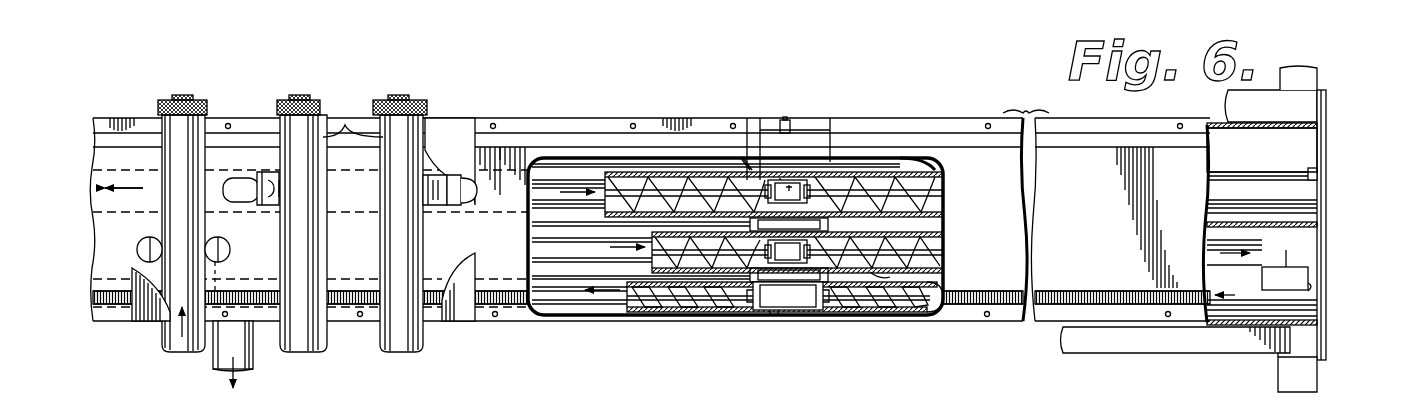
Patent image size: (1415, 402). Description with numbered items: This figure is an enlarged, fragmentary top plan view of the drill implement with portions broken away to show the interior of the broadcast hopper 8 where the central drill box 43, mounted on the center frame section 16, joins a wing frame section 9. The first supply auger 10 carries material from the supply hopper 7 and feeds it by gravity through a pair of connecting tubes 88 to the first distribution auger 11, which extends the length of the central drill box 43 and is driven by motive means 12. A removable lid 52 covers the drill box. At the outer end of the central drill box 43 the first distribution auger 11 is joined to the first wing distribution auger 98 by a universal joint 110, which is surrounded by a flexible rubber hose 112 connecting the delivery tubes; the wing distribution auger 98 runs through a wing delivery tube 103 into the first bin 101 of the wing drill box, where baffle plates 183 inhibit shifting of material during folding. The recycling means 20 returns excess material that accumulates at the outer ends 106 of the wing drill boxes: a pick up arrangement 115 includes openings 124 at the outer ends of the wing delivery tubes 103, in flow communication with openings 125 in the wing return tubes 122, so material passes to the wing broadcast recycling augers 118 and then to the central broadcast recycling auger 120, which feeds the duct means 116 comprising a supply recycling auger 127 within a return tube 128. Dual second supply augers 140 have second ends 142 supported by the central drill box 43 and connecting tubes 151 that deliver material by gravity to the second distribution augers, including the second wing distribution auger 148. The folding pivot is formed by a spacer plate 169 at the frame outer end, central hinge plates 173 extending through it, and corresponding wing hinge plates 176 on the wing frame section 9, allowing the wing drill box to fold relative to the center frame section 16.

The supply hopper 7 is at (280, 82).
The broadcast hopper 8 is at (390, 58).
The wing frame section 9 is at (127, 250).
The first supply auger 10 is at (166, 340).
The first distribution auger 11 is at (526, 252).
The motive means 12 is at (286, 98).
The center frame section 16 is at (518, 313).
The recycling means 20 is at (1342, 312).
The central drill box 43 is at (545, 140).
The removable lid 52 is at (1073, 223).
The connecting tubes 88 is at (148, 240).
The first wing distribution auger 98 is at (940, 242).
The first bin 101 is at (1275, 315).
The wing delivery tube 103 is at (930, 272).
The outer ends of the wing section drill boxes 106 is at (1315, 148).
The universal joint 110 is at (778, 184).
The flexible rubber hose 112 is at (772, 310).
The pick up arrangement 115 is at (1312, 275).
The duct means 116 is at (1260, 300).
The wing broadcast recycling augers 118 is at (895, 308).
The central broadcast recycling auger 120 is at (704, 308).
The return auger tubes 122 is at (870, 308).
The openings 124 is at (1290, 265).
The openings 125 is at (1312, 290).
The supply recycling auger 127 is at (211, 365).
The return tube 128 is at (252, 360).
The second supply augers 140 is at (390, 181).
The second end 142 is at (342, 130).
The second wing distribution auger 148 is at (938, 186).
The connecting tube 151 is at (232, 183).
The spacer plate 169 is at (775, 140).
The hinge plates 173 is at (746, 142).
The hinge plates 176 is at (805, 128).
The baffle plates 183 is at (935, 160).